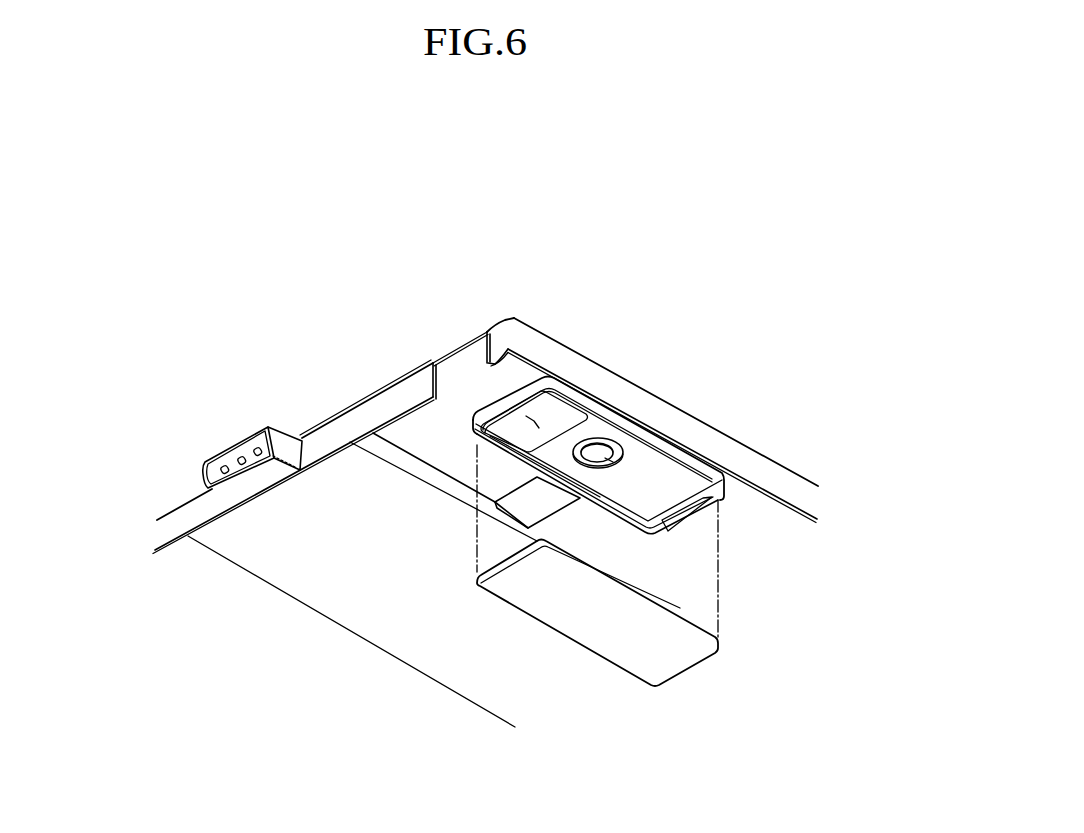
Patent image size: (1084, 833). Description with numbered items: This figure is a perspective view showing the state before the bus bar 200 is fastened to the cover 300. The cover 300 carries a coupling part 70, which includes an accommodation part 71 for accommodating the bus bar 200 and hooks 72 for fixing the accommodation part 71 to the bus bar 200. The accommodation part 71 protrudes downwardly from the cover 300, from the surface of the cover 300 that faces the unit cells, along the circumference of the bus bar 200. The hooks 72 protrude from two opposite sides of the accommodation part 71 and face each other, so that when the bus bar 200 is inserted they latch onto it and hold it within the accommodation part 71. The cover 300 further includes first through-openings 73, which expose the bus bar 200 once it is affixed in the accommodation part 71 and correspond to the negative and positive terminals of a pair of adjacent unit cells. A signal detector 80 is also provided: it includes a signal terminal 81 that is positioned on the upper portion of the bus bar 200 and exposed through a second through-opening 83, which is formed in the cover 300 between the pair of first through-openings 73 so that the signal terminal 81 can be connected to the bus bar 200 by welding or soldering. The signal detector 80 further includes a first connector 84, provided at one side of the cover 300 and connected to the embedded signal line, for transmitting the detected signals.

The coupling part 70 is at (489, 396).
The accommodation part 71 is at (477, 457).
The hooks 72 is at (530, 406).
The first through-openings 73 is at (535, 417).
The signal detector 80 is at (636, 426).
The signal terminal 81 is at (618, 462).
The second through-opening 83 is at (580, 448).
The first connector 84 is at (232, 443).
The bus bar 200 is at (602, 640).
The cover 300 is at (750, 453).